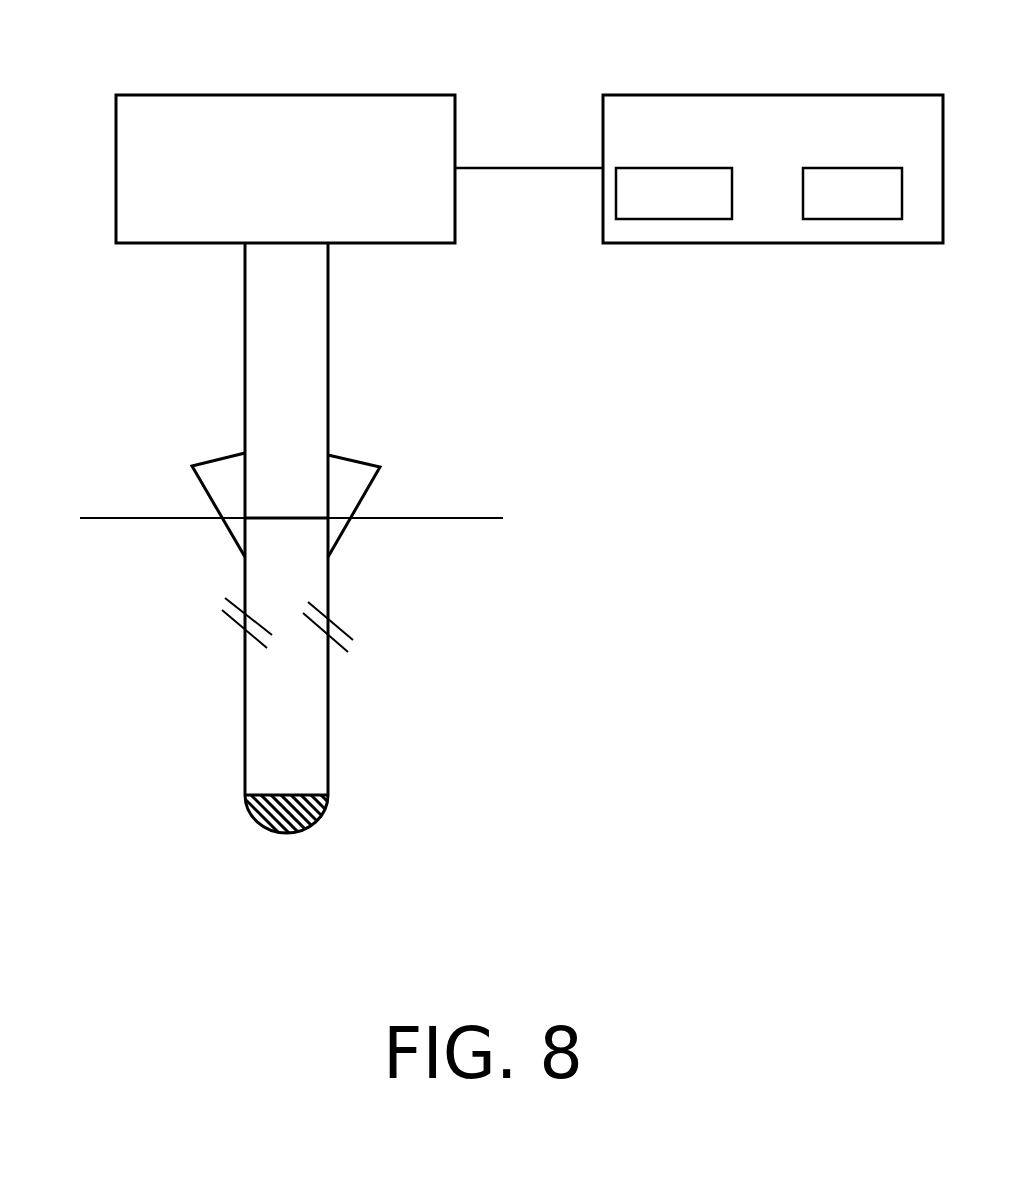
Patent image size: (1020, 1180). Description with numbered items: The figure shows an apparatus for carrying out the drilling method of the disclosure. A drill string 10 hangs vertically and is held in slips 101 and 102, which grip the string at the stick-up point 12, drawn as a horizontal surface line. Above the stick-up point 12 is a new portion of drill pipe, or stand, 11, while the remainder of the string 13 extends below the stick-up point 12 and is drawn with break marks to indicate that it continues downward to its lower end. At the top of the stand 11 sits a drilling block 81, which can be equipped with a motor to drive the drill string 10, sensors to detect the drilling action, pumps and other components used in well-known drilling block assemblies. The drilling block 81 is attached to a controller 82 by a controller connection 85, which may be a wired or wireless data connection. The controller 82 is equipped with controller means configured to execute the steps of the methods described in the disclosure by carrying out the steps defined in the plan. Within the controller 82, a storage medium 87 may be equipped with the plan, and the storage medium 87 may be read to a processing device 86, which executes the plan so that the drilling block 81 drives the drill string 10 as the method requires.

The drill string 10 is at (356, 310).
The drill pipe 11 is at (292, 356).
The stick-up point 12 is at (160, 518).
The remainder of the string 13 is at (302, 583).
The drilling block 81 is at (303, 181).
The controller 82 is at (902, 136).
The controller connection 85 is at (507, 168).
The processing device 86 is at (674, 193).
The storage medium 87 is at (852, 193).
The slip 101 is at (350, 475).
The slip 102 is at (227, 475).